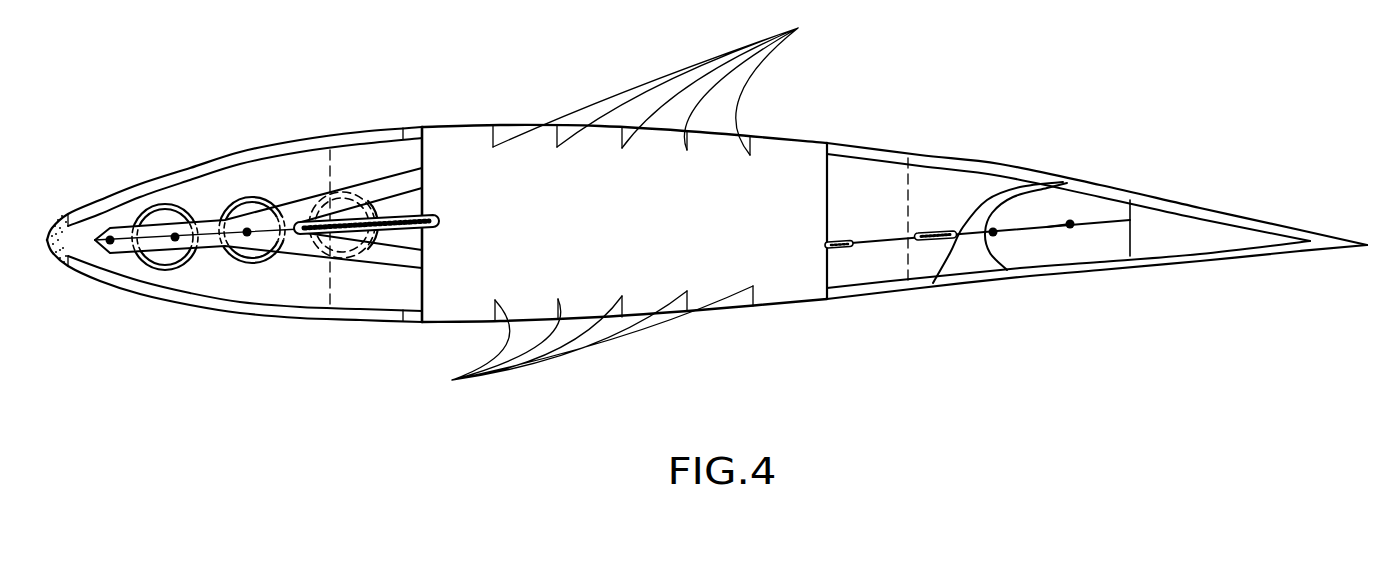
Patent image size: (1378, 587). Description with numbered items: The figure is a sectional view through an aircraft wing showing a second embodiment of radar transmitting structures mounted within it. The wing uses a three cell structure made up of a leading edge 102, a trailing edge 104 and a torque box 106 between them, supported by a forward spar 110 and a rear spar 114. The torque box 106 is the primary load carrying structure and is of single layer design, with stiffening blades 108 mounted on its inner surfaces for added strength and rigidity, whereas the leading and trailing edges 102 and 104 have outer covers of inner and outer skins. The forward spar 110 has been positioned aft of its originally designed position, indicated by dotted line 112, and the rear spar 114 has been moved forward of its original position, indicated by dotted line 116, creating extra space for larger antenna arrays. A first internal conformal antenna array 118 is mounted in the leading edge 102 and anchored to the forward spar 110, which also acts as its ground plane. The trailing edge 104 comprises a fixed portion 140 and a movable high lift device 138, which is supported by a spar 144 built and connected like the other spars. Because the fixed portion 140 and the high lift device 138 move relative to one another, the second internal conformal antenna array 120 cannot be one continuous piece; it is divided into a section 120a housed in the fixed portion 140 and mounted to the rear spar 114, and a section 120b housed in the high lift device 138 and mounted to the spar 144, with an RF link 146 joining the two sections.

The leading edge 102 is at (197, 155).
The trailing edge 104 is at (975, 162).
The torque box 106 is at (482, 122).
The stiffening blades 108 is at (625, 204).
The forward spar 110 is at (422, 152).
The dotted line 112 is at (330, 170).
The rear spar 114 is at (827, 170).
The dotted line 116 is at (910, 178).
The first internal conformal antenna array 118 is at (112, 228).
The second internal conformal antenna array 120 is at (920, 240).
The section of the internal conformal antenna array 120a is at (882, 242).
The section of the internal conformal antenna array 120b is at (1047, 227).
The high lift device 138 is at (1060, 253).
The fixed portion 140 is at (868, 273).
The spar 144 is at (1137, 207).
The RF link 146 is at (970, 237).